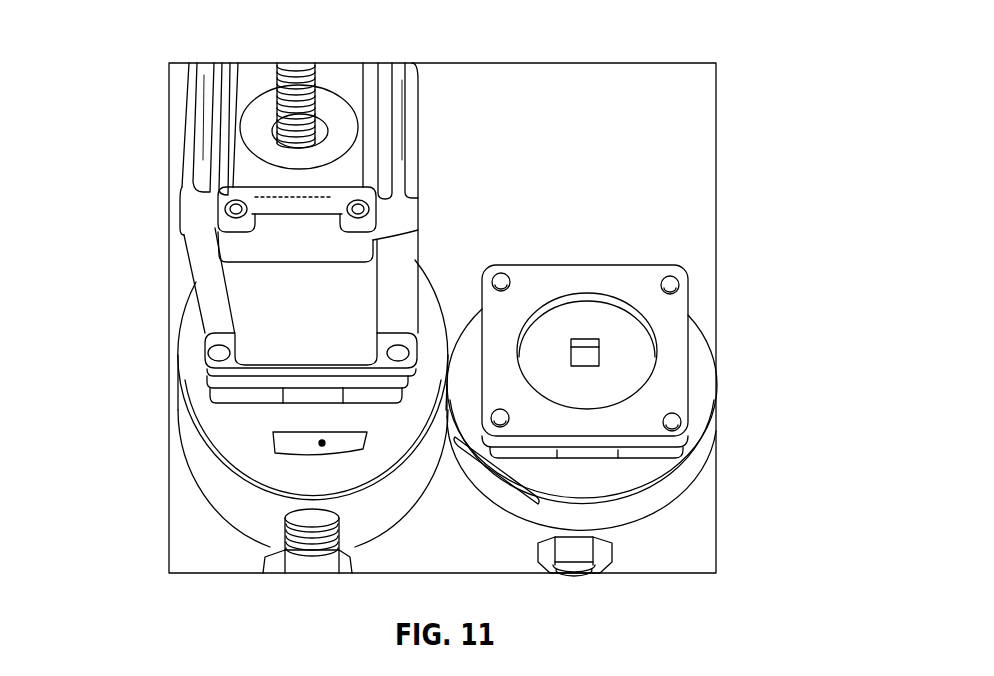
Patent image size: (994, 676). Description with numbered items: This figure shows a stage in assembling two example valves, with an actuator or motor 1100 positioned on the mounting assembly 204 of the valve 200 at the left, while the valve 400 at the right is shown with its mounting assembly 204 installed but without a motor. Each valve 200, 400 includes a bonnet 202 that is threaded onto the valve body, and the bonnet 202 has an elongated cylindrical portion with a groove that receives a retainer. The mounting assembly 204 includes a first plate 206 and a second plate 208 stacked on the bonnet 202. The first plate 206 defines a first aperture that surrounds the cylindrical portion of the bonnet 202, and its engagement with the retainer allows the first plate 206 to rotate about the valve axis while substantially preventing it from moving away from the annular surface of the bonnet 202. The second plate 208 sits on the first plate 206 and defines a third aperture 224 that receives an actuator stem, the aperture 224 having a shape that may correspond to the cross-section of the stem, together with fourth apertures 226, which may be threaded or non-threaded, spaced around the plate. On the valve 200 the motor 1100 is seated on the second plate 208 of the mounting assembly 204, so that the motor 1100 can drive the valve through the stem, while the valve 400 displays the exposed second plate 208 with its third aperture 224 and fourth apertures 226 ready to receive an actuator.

The actuator or motor 1100 is at (224, 92).
The valve 200 is at (175, 271).
The bonnet 202 is at (250, 489).
The mounting assembly 204 is at (192, 331).
The first plate 206 is at (233, 400).
The second plate 208 is at (266, 385).
The third aperture 224 is at (588, 338).
The fourth apertures 226 is at (681, 416).
The valve 400 is at (603, 215).